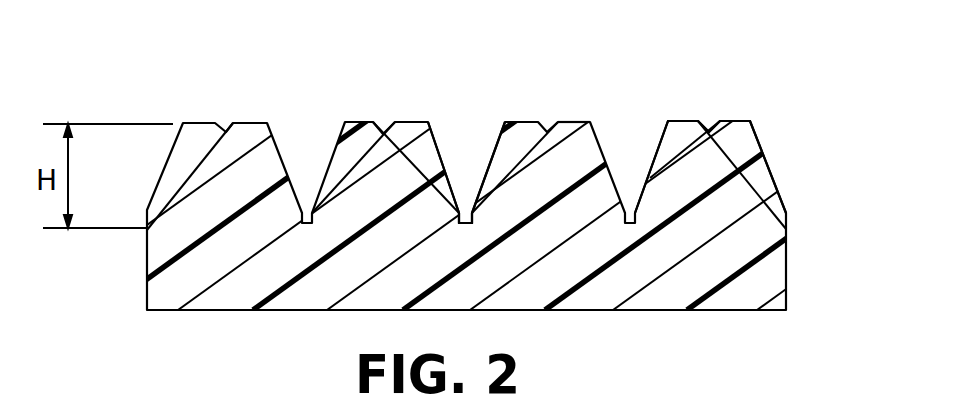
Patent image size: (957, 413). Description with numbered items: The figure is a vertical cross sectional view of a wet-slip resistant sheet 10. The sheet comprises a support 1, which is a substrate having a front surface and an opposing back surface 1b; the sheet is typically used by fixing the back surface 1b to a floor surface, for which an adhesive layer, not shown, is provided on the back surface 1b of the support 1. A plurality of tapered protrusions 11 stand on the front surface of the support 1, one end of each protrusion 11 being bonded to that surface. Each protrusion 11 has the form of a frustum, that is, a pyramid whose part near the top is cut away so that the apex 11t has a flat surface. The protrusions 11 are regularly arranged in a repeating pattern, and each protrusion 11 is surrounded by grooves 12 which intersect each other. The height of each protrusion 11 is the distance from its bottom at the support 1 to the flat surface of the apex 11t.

The wet-slip resistant sheet 10 is at (213, 103).
The support 1 is at (732, 253).
The back surface 1b is at (688, 311).
The tapered protrusion 11 is at (700, 170).
The apex 11t is at (572, 122).
The groove 12 is at (465, 220).